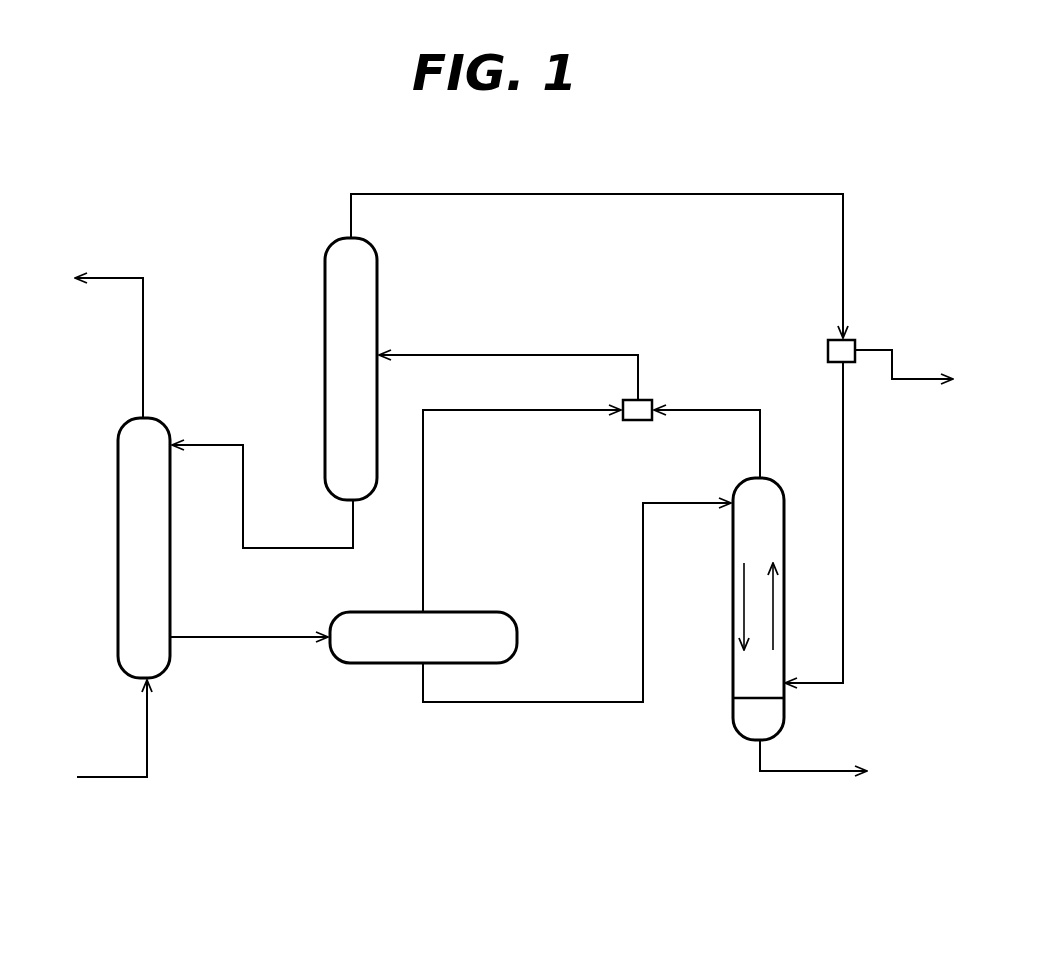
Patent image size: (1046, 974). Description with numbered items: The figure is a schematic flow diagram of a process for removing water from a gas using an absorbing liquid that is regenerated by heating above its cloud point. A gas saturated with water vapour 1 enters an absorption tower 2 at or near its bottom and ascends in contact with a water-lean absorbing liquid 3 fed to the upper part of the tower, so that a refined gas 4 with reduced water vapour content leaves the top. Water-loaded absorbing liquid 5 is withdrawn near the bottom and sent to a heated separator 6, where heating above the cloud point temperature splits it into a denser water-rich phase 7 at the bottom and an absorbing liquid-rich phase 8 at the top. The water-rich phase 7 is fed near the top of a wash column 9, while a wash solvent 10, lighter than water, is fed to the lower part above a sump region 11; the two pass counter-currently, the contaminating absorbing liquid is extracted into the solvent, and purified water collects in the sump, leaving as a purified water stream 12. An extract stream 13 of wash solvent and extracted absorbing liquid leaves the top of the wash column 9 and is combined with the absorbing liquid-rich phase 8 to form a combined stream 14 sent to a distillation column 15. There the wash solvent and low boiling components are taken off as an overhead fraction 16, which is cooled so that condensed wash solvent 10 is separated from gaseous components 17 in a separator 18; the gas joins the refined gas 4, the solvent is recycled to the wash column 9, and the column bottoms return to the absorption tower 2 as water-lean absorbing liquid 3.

The gas saturated with water vapour 1 is at (120, 782).
The absorption tower 2 is at (120, 555).
The water-lean absorbing liquid 3 is at (212, 442).
The refined gas 4 is at (118, 274).
The water-loaded absorbing liquid 5 is at (232, 640).
The heated separator 6 is at (370, 664).
The water-rich phase 7 is at (514, 704).
The absorbing liquid-rich phase 8 is at (425, 522).
The wash column 9 is at (732, 554).
The wash solvent 10 is at (845, 648).
The sump region 11 is at (758, 720).
The purified water stream 12 is at (812, 774).
The extract stream 13 is at (716, 410).
The combined stream 14 is at (533, 354).
The distillation column 15 is at (320, 316).
The overhead fraction 16 is at (628, 190).
The gaseous components 17 is at (896, 350).
The separator 18 is at (828, 351).